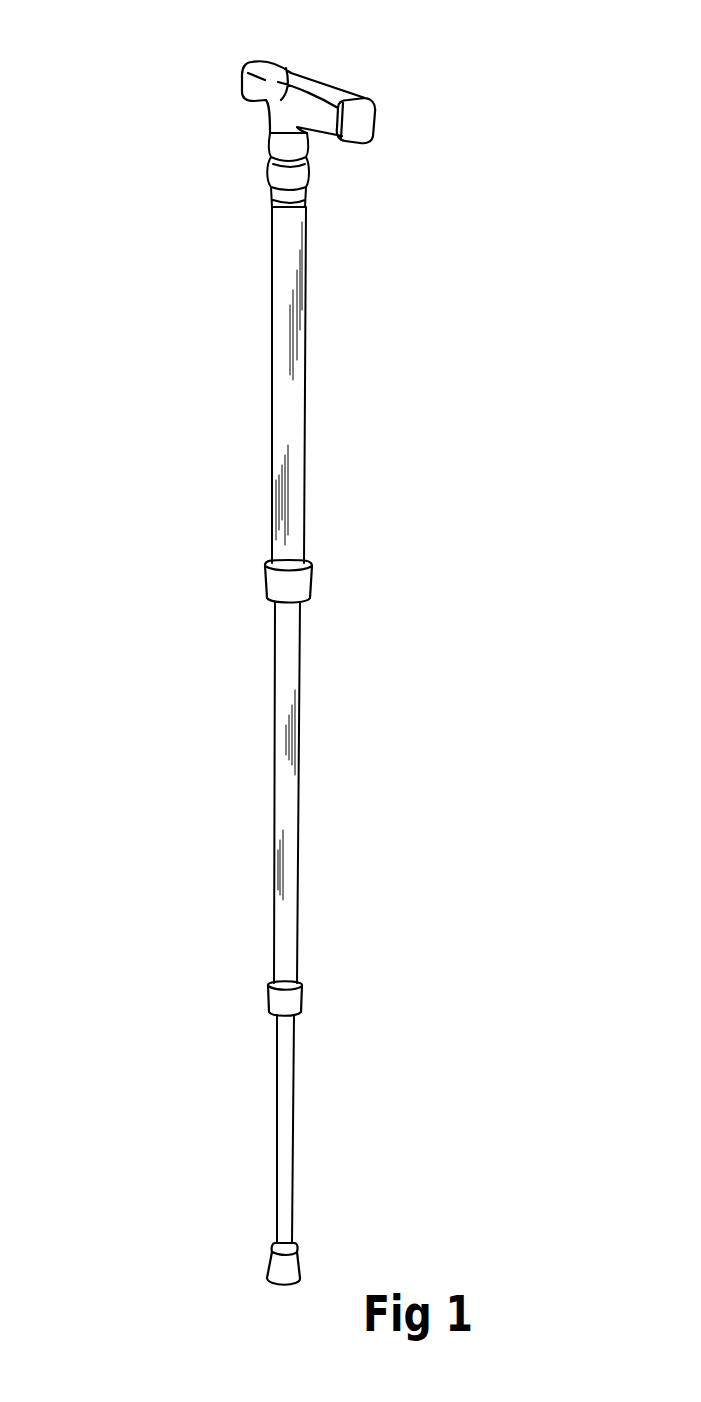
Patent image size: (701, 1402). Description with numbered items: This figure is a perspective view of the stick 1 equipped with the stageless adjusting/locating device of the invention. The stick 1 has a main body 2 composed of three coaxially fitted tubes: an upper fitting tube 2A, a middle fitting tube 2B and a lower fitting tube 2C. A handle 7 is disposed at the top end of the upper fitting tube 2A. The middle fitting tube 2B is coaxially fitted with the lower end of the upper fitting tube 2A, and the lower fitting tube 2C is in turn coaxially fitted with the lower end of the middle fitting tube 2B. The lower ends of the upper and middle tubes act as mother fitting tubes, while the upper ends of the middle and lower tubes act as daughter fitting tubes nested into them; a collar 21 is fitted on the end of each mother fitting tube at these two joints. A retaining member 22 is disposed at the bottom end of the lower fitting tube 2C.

The stick 1 is at (162, 615).
The main body 2 is at (461, 598).
The upper fitting tube 2A is at (297, 340).
The middle fitting tube 2B is at (297, 733).
The lower fitting tube 2C is at (289, 1100).
The handle 7 is at (322, 80).
The collar 21 is at (300, 586).
The retaining member 22 is at (295, 1267).